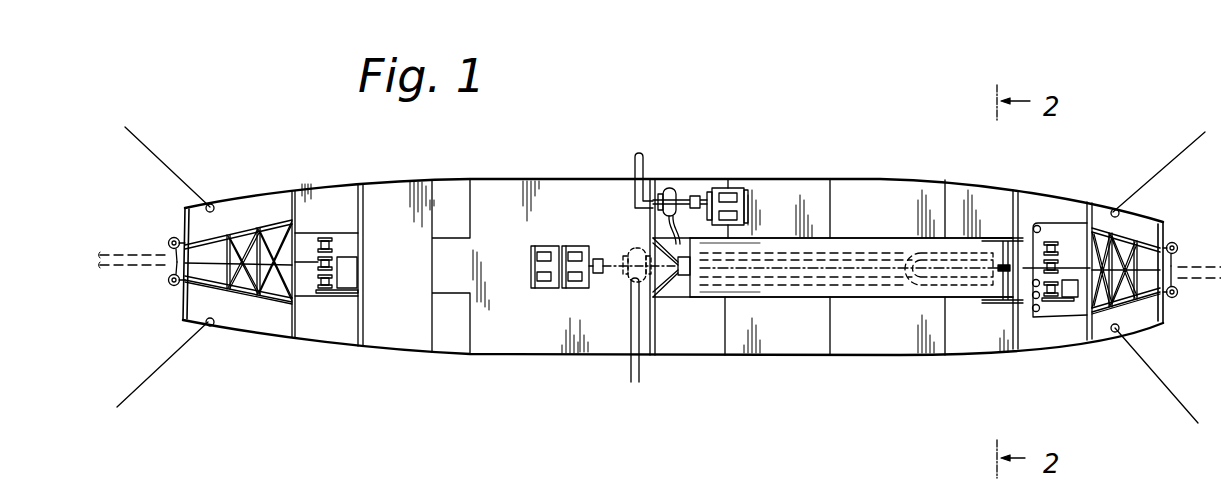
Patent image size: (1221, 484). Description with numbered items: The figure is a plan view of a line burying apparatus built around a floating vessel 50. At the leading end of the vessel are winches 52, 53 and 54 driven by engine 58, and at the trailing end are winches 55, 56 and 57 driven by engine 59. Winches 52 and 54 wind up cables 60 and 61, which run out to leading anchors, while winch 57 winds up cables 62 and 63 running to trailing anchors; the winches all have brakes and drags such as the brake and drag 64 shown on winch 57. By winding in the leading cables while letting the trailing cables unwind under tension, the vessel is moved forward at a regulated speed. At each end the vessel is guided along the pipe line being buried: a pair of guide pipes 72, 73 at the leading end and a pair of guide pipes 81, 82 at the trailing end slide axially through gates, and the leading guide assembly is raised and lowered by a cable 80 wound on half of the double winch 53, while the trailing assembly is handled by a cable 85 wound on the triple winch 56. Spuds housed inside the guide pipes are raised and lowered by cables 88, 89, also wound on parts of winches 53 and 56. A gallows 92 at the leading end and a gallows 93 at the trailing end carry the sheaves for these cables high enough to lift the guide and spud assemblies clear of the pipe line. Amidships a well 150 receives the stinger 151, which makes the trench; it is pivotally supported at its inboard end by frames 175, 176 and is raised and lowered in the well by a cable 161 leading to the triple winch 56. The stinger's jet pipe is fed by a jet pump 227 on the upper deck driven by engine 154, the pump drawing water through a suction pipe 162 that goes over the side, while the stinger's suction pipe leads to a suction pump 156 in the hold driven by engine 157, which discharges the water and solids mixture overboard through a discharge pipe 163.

The vessel 50 is at (399, 179).
The winch 52 is at (333, 244).
The double winch 53 is at (356, 265).
The winch 54 is at (327, 284).
The winch 55 is at (1050, 240).
The triple winch 56 is at (1058, 268).
The winch 57 is at (1050, 315).
The engine 58 is at (352, 281).
The engine 59 is at (1080, 297).
The cable 60 is at (170, 172).
The cable 61 is at (165, 372).
The cable 62 is at (1183, 150).
The cable 63 is at (1188, 405).
The brake and drag 64 is at (1066, 303).
The guide pipe 72 is at (170, 240).
The guide pipe 73 is at (168, 282).
The cable 80 is at (276, 302).
The guide pipe 81 is at (1173, 246).
The guide pipe 82 is at (1173, 297).
The cable 85 is at (1132, 307).
The cable 88 is at (279, 232).
The cable 89 is at (1122, 290).
The gallows 92 is at (233, 233).
The gallows 93 is at (1097, 318).
The well 150 is at (846, 285).
The stinger 151 is at (920, 252).
The engine 154 is at (728, 182).
The suction pump 156 is at (628, 280).
The engine 157 is at (560, 295).
The cable 161 is at (1010, 304).
The suction pipe 162 is at (635, 165).
The discharge pipe 163 is at (640, 372).
The frame 175 is at (700, 243).
The frame 176 is at (700, 292).
The jet pump 227 is at (667, 188).